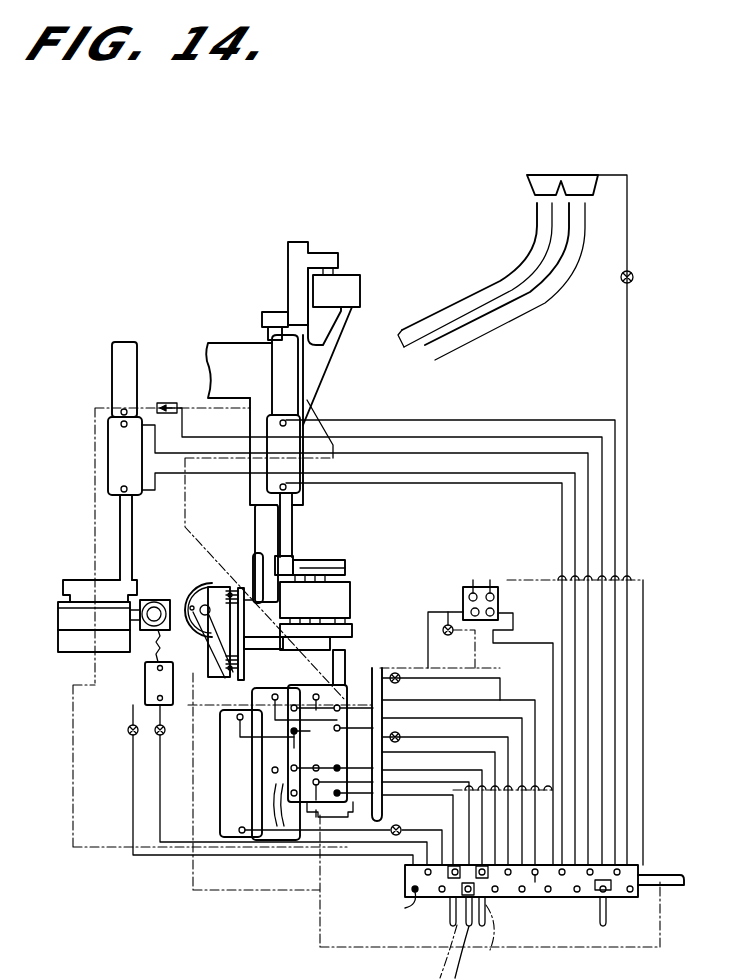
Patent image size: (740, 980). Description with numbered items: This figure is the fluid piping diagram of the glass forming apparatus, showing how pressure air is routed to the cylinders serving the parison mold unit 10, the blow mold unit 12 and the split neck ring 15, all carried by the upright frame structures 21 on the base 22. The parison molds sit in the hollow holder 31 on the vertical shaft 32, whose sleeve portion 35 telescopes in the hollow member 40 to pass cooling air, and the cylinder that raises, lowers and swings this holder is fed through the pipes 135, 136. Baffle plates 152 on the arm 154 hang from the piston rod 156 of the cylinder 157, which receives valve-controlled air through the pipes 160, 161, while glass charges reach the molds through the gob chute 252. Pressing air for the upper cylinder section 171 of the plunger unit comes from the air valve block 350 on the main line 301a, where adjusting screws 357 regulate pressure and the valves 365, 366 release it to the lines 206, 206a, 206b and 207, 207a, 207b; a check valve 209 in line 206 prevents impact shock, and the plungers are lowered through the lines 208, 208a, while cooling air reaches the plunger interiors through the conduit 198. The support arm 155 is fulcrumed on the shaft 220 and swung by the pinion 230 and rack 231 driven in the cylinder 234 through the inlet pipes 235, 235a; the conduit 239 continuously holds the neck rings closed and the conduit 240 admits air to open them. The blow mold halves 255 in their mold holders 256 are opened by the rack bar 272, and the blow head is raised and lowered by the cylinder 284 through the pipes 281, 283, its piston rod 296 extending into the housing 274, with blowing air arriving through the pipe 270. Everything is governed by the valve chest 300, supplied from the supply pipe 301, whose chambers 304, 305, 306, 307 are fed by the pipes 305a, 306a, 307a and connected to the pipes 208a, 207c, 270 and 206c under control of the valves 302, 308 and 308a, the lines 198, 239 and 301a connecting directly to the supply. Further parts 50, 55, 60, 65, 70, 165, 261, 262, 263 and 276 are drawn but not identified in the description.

The parison mold unit 10 is at (380, 590).
The blow mold unit 12 is at (70, 578).
The split neck ring 15 is at (352, 619).
The upright frame structure 21 is at (95, 463).
The base 22 is at (73, 740).
The hollow holder 31 is at (352, 600).
The vertical shaft 32 is at (267, 337).
The hollow sleeve portion 35 is at (252, 515).
The hollow member 40 is at (240, 380).
The carriage block 50 is at (266, 319).
The upper arm 55 is at (296, 262).
The link 60 is at (338, 320).
The motor 65 is at (340, 301).
The arm pivot 70 is at (333, 254).
The pipe 135 is at (470, 726).
The pipe 136 is at (470, 760).
The baffle plates 152 is at (318, 572).
The arm 154 is at (330, 570).
The support arm 155 is at (352, 633).
The piston rod 156 is at (286, 530).
The fluid pressure cylinder 157 is at (300, 420).
The pipe 160 is at (444, 412).
The pipe 161 is at (420, 483).
The hydraulic cylinder 165 is at (285, 371).
The upper cylinder section 171 is at (345, 666).
The conduit 198 is at (325, 957).
The line 206 is at (430, 658).
The line 206a is at (383, 716).
The line 206b is at (384, 771).
The pipe 206c is at (500, 650).
The line 207 is at (440, 620).
The line 207a is at (292, 748).
The line 207b is at (373, 797).
The pipe 207c is at (496, 692).
The line 208 is at (410, 700).
The line 208a is at (384, 785).
The check valve 209 is at (448, 625).
The shaft 220 is at (208, 605).
The pinion 230 is at (190, 592).
The pinion rack 231 is at (224, 686).
The cylinder 234 is at (247, 804).
The air inlet pipe 235 is at (420, 828).
The air inlet pipe 235a is at (415, 742).
The conduit 239 is at (262, 890).
The conduit 240 is at (525, 680).
The gob chute 252 is at (503, 303).
The blow mold halves 255 is at (72, 641).
The mold holders 256 is at (72, 621).
The pilot valve 261 is at (148, 690).
The hydraulic line 262 is at (160, 785).
The hydraulic line 263 is at (133, 757).
The pipe 270 is at (526, 437).
The rack bar 272 is at (159, 645).
The housing 274 is at (123, 372).
The pulley 276 is at (152, 600).
The pipe 281 is at (402, 457).
The pipe 283 is at (455, 474).
The fluid pressure cylinder 284 is at (117, 445).
The piston rod 296 is at (127, 540).
The valve chest 300 is at (640, 868).
The supply pipe 301 is at (660, 890).
The main line 301a is at (599, 520).
The valve 302 is at (415, 892).
The chamber 304 is at (452, 958).
The chamber 305 is at (484, 905).
The pipe 305a is at (486, 940).
The chamber 306 is at (603, 895).
The pipe 306a is at (603, 926).
The chamber 307 is at (453, 866).
The pipe 307a is at (450, 925).
The valve 308 is at (469, 883).
The valve 308a is at (482, 866).
The air valve block 350 is at (499, 598).
The adjusting screws 357 is at (490, 593).
The valve 365 is at (473, 593).
The valve 366 is at (499, 612).